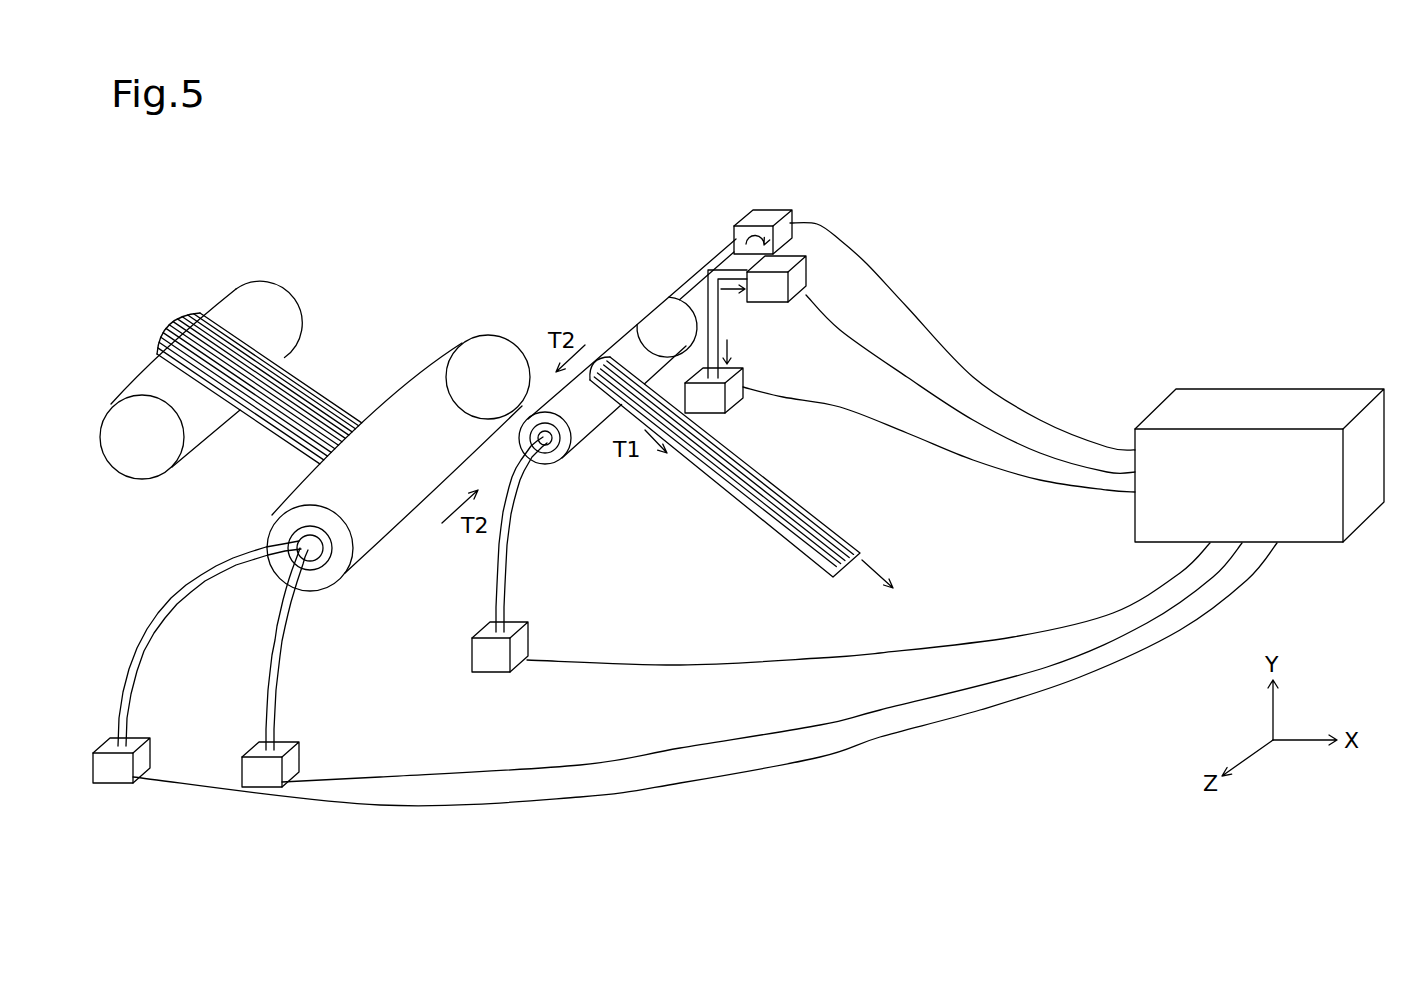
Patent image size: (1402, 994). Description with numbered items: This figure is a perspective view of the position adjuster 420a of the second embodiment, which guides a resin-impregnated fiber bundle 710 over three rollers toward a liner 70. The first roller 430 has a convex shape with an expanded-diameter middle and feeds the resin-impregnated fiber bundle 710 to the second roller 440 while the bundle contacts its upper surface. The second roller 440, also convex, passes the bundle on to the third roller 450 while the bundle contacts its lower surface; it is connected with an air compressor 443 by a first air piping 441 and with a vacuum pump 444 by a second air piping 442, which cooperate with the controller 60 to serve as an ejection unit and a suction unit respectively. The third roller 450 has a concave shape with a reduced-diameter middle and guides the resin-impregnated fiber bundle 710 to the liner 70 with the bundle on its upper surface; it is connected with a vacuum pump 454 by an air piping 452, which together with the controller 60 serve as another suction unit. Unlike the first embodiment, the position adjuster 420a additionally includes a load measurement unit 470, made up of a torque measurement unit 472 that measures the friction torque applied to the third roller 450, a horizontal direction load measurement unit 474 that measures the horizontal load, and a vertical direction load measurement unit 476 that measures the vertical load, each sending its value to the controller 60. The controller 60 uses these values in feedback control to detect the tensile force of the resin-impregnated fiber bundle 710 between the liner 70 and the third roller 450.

The controller 60 is at (1197, 388).
The liner 70 is at (905, 590).
The position adjuster 420a is at (396, 193).
The first roller 430 is at (218, 298).
The second roller 440 is at (373, 572).
The first air piping 441 is at (129, 681).
The second air piping 442 is at (277, 682).
The air compressor 443 is at (150, 737).
The vacuum pump 444 is at (294, 740).
The third roller 450 is at (638, 308).
The air piping 452 is at (507, 565).
The vacuum pump 454 is at (531, 634).
The load measurement unit 470 is at (884, 218).
The torque measurement unit 472 is at (780, 208).
The horizontal direction load measurement unit 474 is at (806, 276).
The vertical direction load measurement unit 476 is at (742, 400).
The resin-impregnated fiber bundle 710 is at (803, 541).